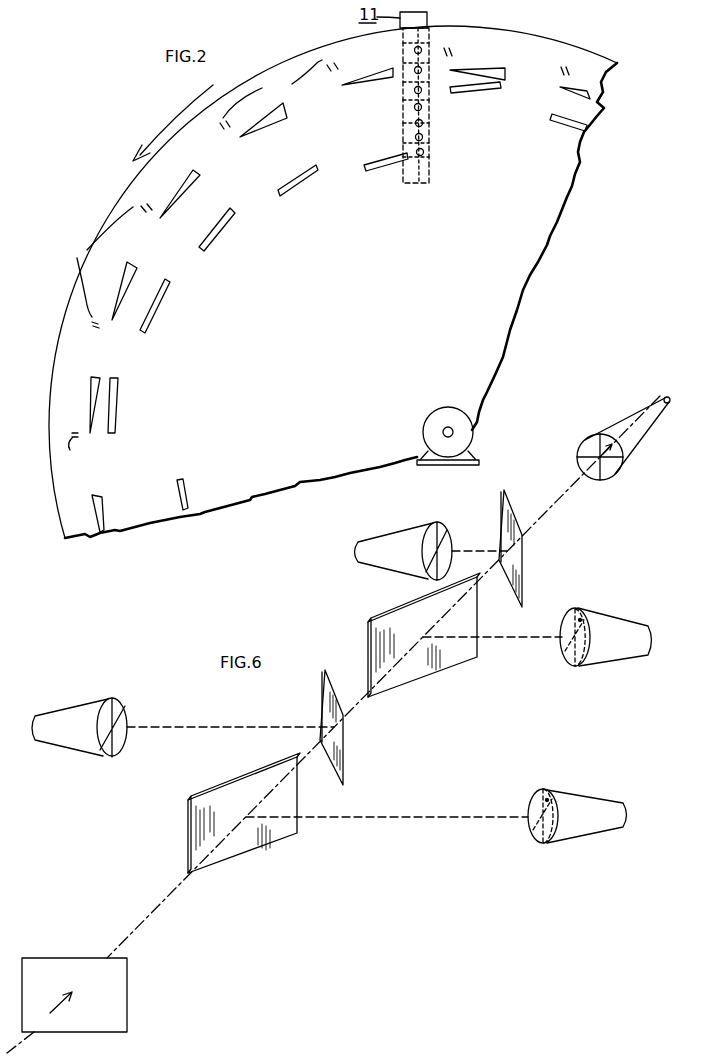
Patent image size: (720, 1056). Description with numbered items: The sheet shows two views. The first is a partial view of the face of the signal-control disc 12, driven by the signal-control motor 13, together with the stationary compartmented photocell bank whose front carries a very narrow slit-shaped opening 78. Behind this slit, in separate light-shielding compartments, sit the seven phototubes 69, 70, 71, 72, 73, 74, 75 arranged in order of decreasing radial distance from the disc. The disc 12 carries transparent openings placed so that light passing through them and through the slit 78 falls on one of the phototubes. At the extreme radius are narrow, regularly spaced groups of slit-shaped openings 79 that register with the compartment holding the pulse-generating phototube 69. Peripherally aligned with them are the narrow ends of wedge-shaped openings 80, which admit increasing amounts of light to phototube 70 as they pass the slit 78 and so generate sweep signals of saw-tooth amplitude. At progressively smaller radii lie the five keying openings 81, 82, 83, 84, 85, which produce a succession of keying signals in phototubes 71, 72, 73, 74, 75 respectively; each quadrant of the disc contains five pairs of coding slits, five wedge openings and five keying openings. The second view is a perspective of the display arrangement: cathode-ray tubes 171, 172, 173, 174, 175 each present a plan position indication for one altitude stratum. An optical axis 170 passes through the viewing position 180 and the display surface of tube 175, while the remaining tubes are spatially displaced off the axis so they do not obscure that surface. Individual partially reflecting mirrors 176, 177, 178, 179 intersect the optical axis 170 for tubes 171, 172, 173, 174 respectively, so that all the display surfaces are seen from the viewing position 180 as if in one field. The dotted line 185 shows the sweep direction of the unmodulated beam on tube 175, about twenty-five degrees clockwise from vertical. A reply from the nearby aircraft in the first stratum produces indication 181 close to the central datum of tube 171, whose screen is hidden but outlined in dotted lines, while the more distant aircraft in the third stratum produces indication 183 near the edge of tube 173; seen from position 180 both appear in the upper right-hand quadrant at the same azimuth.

In FIG. 2, the signal-control disc 12 is at (577, 165).
In FIG. 2, the signal-control motor 13 is at (423, 433).
In FIG. 2, the pulse-generating phototube 69 is at (413, 52).
In FIG. 2, the phototube 70 is at (414, 72).
In FIG. 2, the phototube 71 is at (423, 88).
In FIG. 2, the phototube 72 is at (413, 107).
In FIG. 2, the phototube 73 is at (436, 113).
In FIG. 2, the phototube 74 is at (414, 138).
In FIG. 2, the phototube 75 is at (425, 152).
In FIG. 2, the slit-shaped opening 78 is at (427, 22).
In FIG. 2, the slit-shaped openings 79 is at (199, 267).
In FIG. 2, the wedge-shaped openings 80 is at (287, 118).
In FIG. 2, the keying opening 81 is at (118, 402).
In FIG. 2, the keying opening 82 is at (160, 298).
In FIG. 2, the keying opening 83 is at (224, 226).
In FIG. 2, the keying opening 84 is at (305, 180).
In FIG. 2, the keying opening 85 is at (384, 164).
In FIG. 6, the optical axis 170 is at (571, 488).
In FIG. 6, the cathode-ray tube 171 is at (566, 796).
In FIG. 6, the cathode-ray tube 172 is at (99, 700).
In FIG. 6, the cathode-ray tube 173 is at (608, 620).
In FIG. 6, the cathode-ray tube 174 is at (399, 533).
In FIG. 6, the cathode-ray tube 175 is at (618, 413).
In FIG. 6, the partially reflecting mirror 176 is at (300, 795).
In FIG. 6, the partially reflecting mirror 177 is at (345, 738).
In FIG. 6, the partially reflecting mirror 178 is at (478, 590).
In FIG. 6, the partially reflecting mirror 179 is at (522, 572).
In FIG. 6, the viewing position 180 is at (127, 968).
In FIG. 6, the indication 181 is at (547, 800).
In FIG. 6, the indication 183 is at (580, 620).
In FIG. 6, the dotted line 185 is at (616, 445).